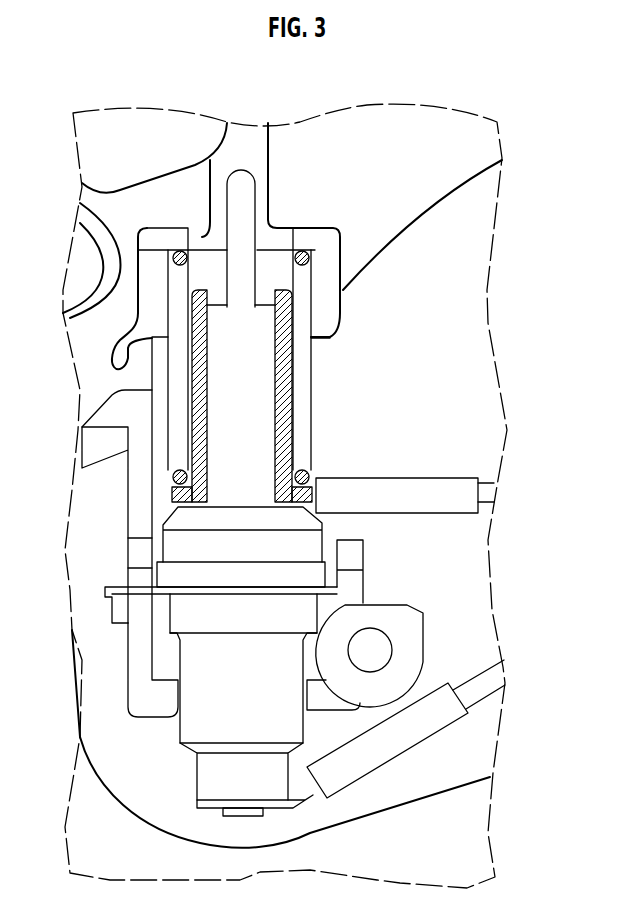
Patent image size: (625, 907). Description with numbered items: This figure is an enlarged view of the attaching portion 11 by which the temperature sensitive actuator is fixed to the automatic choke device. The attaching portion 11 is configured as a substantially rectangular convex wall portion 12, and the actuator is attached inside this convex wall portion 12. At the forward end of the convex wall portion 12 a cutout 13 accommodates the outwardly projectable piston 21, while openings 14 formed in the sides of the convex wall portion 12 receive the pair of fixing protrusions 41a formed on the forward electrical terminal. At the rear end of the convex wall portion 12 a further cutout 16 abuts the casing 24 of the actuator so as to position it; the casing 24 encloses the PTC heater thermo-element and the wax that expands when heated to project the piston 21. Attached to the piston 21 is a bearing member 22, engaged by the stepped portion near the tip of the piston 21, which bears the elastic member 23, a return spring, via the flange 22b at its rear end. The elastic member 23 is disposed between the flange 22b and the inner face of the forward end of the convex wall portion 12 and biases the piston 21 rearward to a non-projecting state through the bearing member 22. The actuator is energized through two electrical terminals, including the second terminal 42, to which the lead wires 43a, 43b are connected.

The attaching portion 11 is at (147, 215).
The convex wall portion 12 is at (135, 445).
The cutout 13 is at (210, 190).
The openings 14 is at (133, 553).
The cutout 16 is at (190, 708).
The piston 21 is at (250, 193).
The bearing member 22 is at (283, 388).
The flange 22b is at (172, 490).
The elastic member 23 is at (303, 420).
The casing 24 is at (190, 663).
The fixing protrusions 41a is at (115, 585).
The second terminal 42 is at (313, 797).
The lead wire 43a is at (488, 488).
The lead wire 43b is at (473, 685).